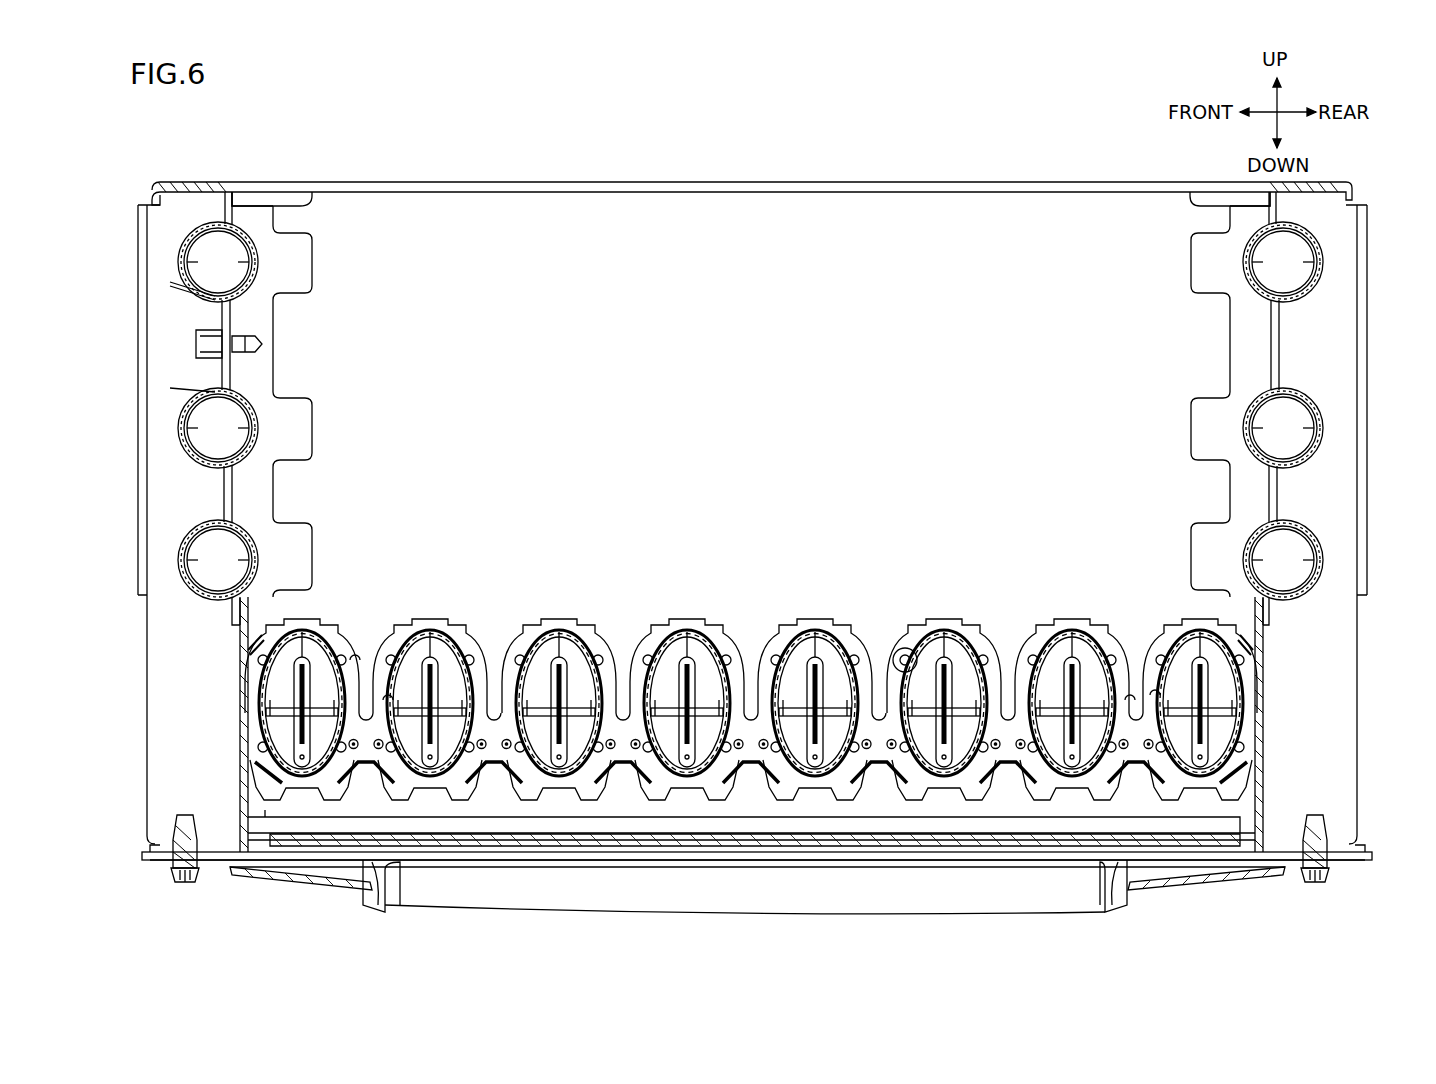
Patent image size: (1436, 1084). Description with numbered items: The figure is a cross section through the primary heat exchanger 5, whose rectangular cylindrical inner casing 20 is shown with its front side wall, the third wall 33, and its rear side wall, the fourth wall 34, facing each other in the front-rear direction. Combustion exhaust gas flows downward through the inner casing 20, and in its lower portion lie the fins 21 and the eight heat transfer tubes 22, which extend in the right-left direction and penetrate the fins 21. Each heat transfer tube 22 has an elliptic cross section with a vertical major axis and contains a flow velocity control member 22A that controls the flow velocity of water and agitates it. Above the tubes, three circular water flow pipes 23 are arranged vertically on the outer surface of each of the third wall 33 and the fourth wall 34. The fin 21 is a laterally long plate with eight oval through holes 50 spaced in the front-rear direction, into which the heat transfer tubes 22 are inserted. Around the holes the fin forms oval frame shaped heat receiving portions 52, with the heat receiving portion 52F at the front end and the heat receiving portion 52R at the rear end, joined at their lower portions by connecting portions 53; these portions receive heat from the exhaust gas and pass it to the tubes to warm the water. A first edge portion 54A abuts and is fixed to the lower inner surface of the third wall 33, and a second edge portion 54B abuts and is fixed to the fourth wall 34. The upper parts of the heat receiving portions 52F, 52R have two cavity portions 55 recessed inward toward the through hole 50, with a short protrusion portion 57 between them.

The primary heat exchanger 5 is at (752, 130).
The inner casing 20 is at (340, 182).
The fins 21 is at (668, 612).
The heat transfer tubes 22 is at (905, 660).
The flow velocity control member 22A is at (968, 748).
The water flow pipes 23 is at (210, 560).
The third wall 33 is at (240, 622).
The fourth wall 34 is at (1265, 622).
The through holes 50 is at (788, 652).
The heat receiving portions 52 is at (1058, 626).
The heat receiving portion 52F is at (330, 640).
The heat receiving portion 52R is at (1185, 630).
The connecting portions 53 is at (1138, 764).
The first edge portion 54A is at (240, 737).
The second edge portion 54B is at (1263, 737).
The cavity portions 55 is at (350, 662).
The protrusion portion 57 is at (362, 697).